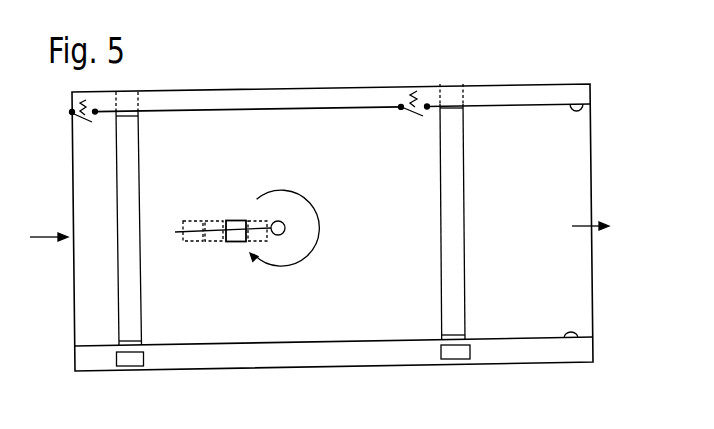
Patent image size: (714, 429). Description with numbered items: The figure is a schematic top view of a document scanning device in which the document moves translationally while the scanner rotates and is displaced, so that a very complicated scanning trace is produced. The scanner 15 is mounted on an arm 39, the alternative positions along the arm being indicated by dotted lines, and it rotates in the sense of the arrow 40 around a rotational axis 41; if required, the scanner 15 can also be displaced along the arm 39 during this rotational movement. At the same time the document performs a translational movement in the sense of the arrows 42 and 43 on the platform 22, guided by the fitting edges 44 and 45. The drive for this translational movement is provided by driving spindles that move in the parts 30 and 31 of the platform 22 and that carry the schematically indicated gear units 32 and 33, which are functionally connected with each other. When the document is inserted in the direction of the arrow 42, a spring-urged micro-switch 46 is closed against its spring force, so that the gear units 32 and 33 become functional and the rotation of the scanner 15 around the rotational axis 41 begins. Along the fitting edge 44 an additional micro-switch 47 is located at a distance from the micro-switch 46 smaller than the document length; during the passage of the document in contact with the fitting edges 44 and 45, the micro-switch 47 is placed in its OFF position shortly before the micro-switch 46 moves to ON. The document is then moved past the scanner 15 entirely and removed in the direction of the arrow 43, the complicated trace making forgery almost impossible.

The platform 22 is at (535, 186).
The part of the platform 30 is at (120, 328).
The part of the platform 31 is at (466, 316).
The gear unit 32 is at (137, 361).
The gear unit 33 is at (465, 356).
The spring-urged micro-switch 46 is at (76, 120).
The micro-switch 47 is at (400, 110).
The fitting edge 44 is at (583, 104).
The fitting edge 45 is at (578, 338).
The arrow 42 is at (42, 232).
The arrow 43 is at (597, 223).
The arm 39 is at (178, 233).
The scanner 15 is at (238, 242).
The rotational axis 41 is at (285, 225).
The arrow 40 is at (300, 258).